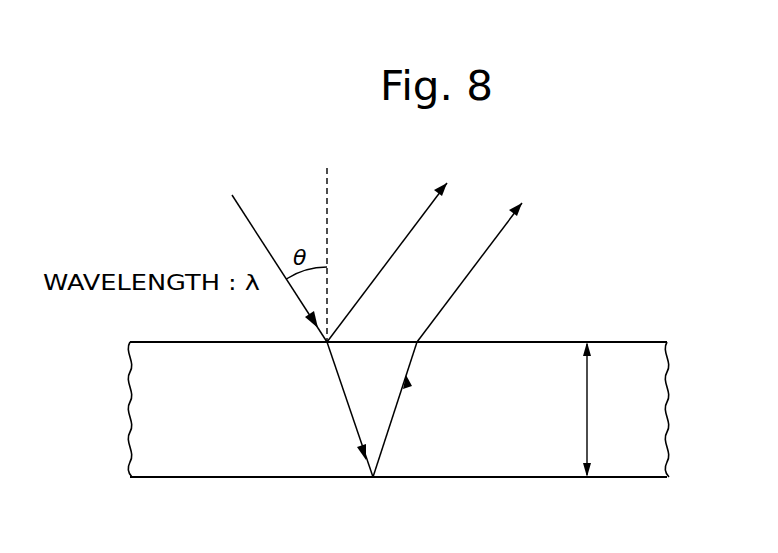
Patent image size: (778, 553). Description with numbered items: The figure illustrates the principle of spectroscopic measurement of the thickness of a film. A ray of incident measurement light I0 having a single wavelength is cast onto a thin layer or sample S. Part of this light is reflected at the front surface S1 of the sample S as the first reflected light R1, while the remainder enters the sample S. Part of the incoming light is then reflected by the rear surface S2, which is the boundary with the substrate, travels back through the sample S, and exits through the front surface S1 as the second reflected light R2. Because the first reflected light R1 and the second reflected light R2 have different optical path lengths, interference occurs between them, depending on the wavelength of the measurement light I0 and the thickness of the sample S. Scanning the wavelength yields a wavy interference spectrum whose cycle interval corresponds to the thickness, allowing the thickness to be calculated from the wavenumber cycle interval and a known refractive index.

The thin layer S is at (625, 348).
The front surface S1 is at (540, 342).
The rear surface S2 is at (518, 477).
The incident light I0 is at (177, 239).
The first reflected light R1 is at (526, 246).
The second reflected light R2 is at (440, 336).